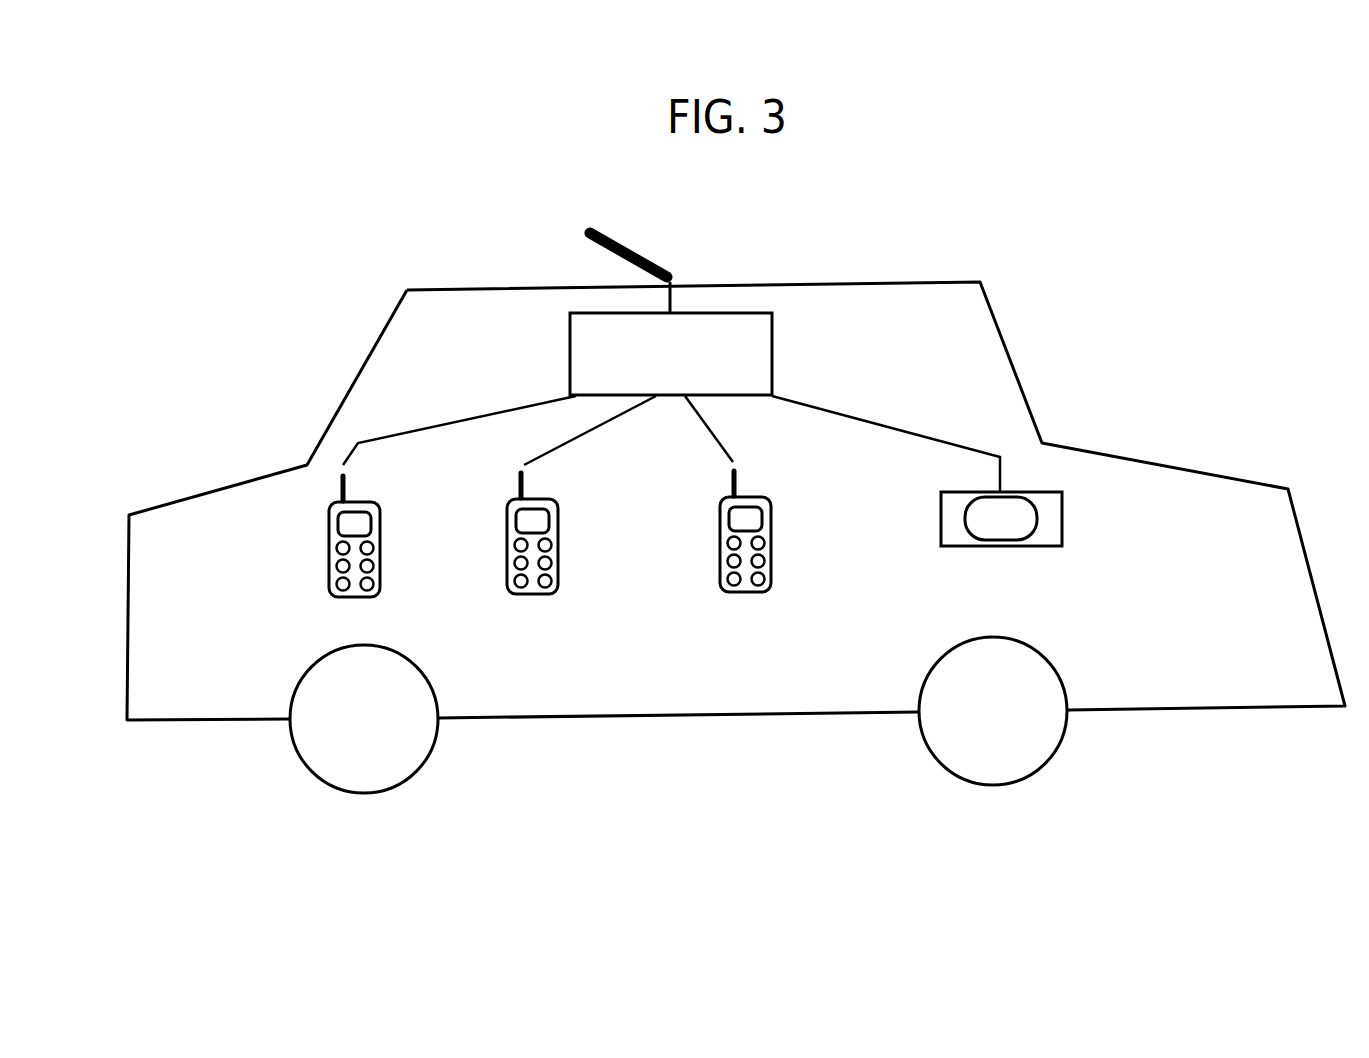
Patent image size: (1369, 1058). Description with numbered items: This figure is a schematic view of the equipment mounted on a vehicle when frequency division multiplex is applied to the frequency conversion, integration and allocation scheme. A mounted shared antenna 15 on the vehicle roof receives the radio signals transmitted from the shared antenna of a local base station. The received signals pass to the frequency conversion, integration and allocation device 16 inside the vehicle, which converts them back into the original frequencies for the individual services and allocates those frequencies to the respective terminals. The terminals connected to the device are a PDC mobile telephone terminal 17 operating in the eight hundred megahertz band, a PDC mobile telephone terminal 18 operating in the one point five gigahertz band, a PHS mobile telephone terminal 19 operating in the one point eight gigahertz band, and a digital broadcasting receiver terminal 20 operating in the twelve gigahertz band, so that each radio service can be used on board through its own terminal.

The mounted shared antenna 15 is at (627, 248).
The frequency conversion, integration and allocation device 16 is at (772, 350).
The PDC mobile telephone terminal 17 is at (381, 510).
The PDC mobile telephone terminal 18 is at (559, 508).
The PHS mobile telephone terminal 19 is at (773, 506).
The digital broadcasting receiver terminal 20 is at (1063, 505).